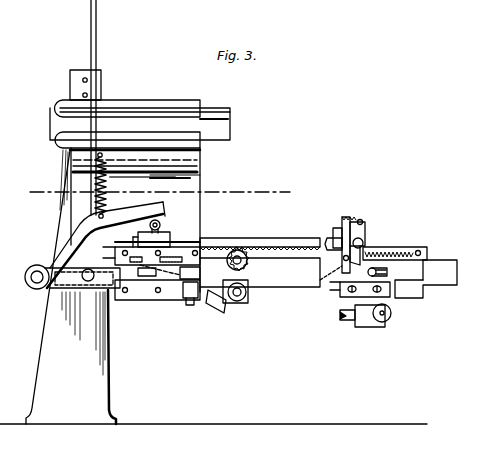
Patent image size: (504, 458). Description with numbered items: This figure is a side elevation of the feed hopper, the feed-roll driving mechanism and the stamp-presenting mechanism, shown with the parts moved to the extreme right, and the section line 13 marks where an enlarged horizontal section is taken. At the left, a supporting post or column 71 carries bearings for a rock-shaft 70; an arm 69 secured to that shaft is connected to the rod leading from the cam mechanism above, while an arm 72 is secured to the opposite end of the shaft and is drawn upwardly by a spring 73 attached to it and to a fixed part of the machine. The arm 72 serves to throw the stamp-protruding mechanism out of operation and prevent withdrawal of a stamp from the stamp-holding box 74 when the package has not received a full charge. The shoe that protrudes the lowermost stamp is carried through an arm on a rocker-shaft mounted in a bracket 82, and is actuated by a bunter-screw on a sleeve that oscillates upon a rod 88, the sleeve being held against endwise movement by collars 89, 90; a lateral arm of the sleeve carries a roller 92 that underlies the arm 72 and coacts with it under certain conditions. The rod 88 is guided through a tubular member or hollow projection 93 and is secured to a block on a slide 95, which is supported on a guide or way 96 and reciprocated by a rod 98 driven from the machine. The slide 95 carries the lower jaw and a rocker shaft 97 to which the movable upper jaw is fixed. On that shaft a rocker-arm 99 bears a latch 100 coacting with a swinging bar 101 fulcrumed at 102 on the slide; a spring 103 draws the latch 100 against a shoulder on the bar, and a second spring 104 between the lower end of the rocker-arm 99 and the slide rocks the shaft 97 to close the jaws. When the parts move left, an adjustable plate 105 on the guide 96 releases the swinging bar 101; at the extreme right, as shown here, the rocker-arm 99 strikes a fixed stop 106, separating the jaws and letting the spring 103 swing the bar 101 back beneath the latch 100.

The section line 13— 13 is at (157, 193).
The arm 69 is at (42, 299).
The rock-shaft 70 is at (44, 275).
The supporting post or column 71 is at (55, 350).
The arm 72 is at (66, 244).
The spring 73 is at (107, 181).
The stamp-holding box 74 is at (196, 181).
The bracket 82 is at (190, 298).
The rod 88 is at (263, 240).
The collar 89 is at (190, 244).
The collar 90 is at (148, 236).
The roller 92 is at (162, 229).
The tubular member or hollow projection 93 is at (216, 240).
The slide 95 is at (414, 290).
The guide or way 96 is at (268, 276).
The rocker shaft 97 is at (370, 251).
The rod 98 is at (348, 316).
The rocker-arm 99 is at (362, 232).
The latch 100 is at (366, 240).
The swinging bar 101 is at (342, 233).
The fulcrum 102 is at (349, 244).
The spring 103 is at (348, 218).
The spring 104 is at (407, 250).
The adjustable plate 105 is at (219, 312).
The fixed stop 106 is at (389, 272).